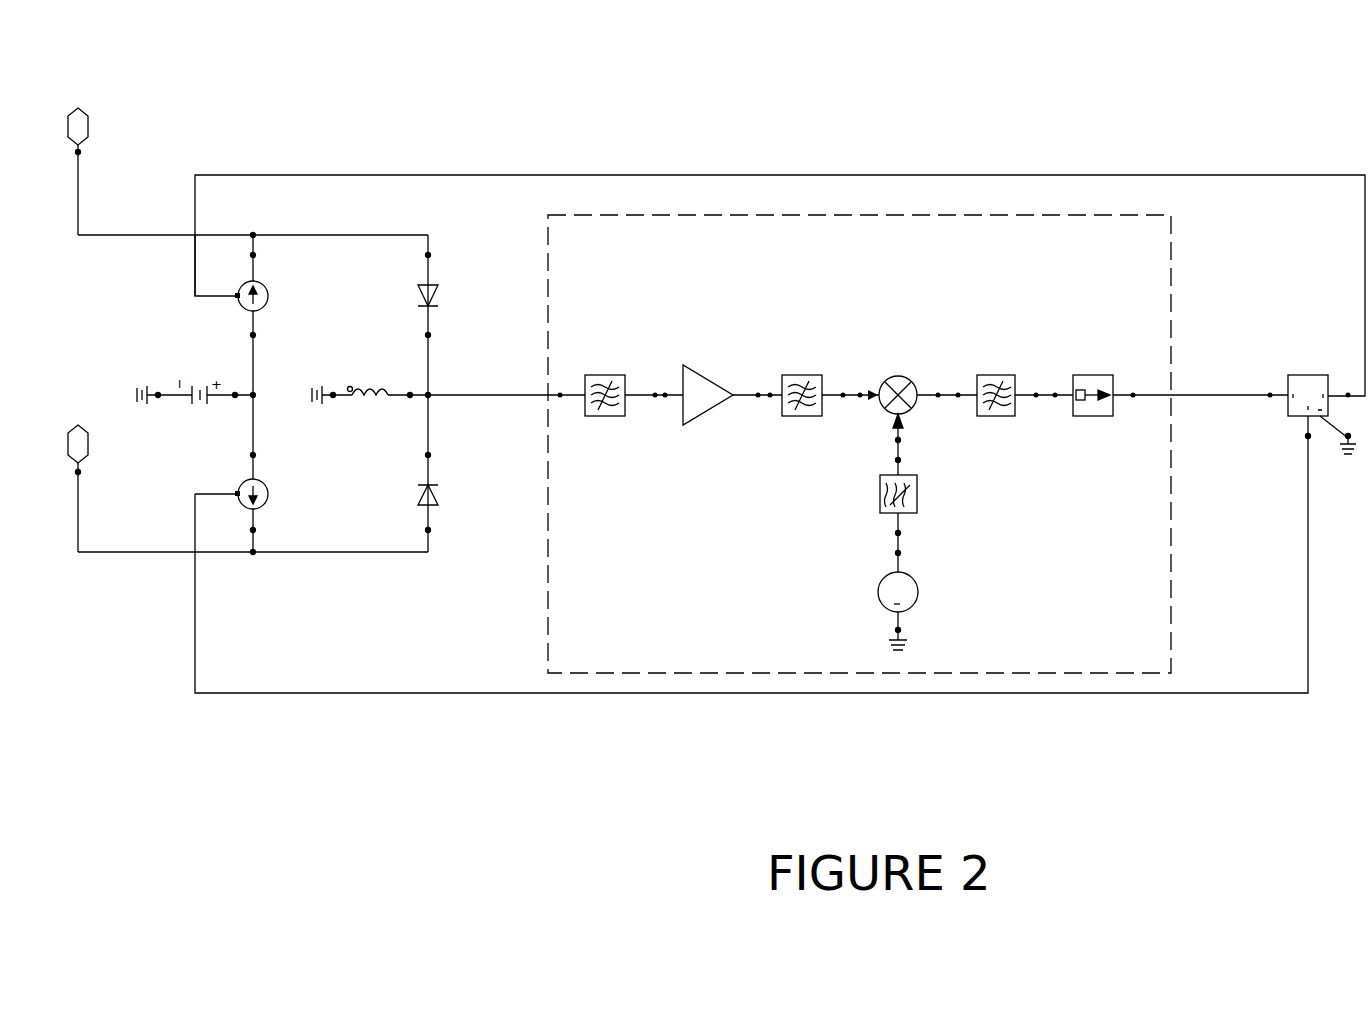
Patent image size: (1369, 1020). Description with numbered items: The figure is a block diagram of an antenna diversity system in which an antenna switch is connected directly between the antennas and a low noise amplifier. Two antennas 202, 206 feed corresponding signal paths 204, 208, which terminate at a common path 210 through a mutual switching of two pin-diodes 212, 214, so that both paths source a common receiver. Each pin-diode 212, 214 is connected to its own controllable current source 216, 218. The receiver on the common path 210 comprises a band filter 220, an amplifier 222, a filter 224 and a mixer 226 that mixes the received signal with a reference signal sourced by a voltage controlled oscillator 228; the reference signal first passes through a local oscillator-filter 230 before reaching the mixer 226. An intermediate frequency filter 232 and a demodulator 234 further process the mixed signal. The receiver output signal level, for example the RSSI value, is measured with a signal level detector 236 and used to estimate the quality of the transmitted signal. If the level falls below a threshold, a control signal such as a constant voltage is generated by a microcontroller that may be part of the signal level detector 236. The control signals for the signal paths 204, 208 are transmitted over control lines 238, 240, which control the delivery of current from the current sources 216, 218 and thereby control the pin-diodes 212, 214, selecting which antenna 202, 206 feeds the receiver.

The antenna 202 is at (84, 128).
The signal path 204 is at (172, 207).
The antenna 206 is at (84, 445).
The signal path 208 is at (160, 565).
The common path 210 is at (796, 318).
The pin-diode 212 is at (433, 292).
The pin-diode 214 is at (433, 497).
The controllable current source 216 is at (266, 297).
The controllable current source 218 is at (266, 492).
The band filter 220 is at (597, 382).
The amplifier 222 is at (698, 392).
The filter 224 is at (792, 410).
The mixer 226 is at (898, 382).
The voltage controlled oscillator 228 is at (908, 600).
The local oscillator-filter 230 is at (910, 502).
The intermediate frequency filter 232 is at (995, 383).
The demodulator 234 is at (1095, 380).
The signal level detector 236 is at (1305, 388).
The control line 238 is at (455, 175).
The control line 240 is at (441, 693).